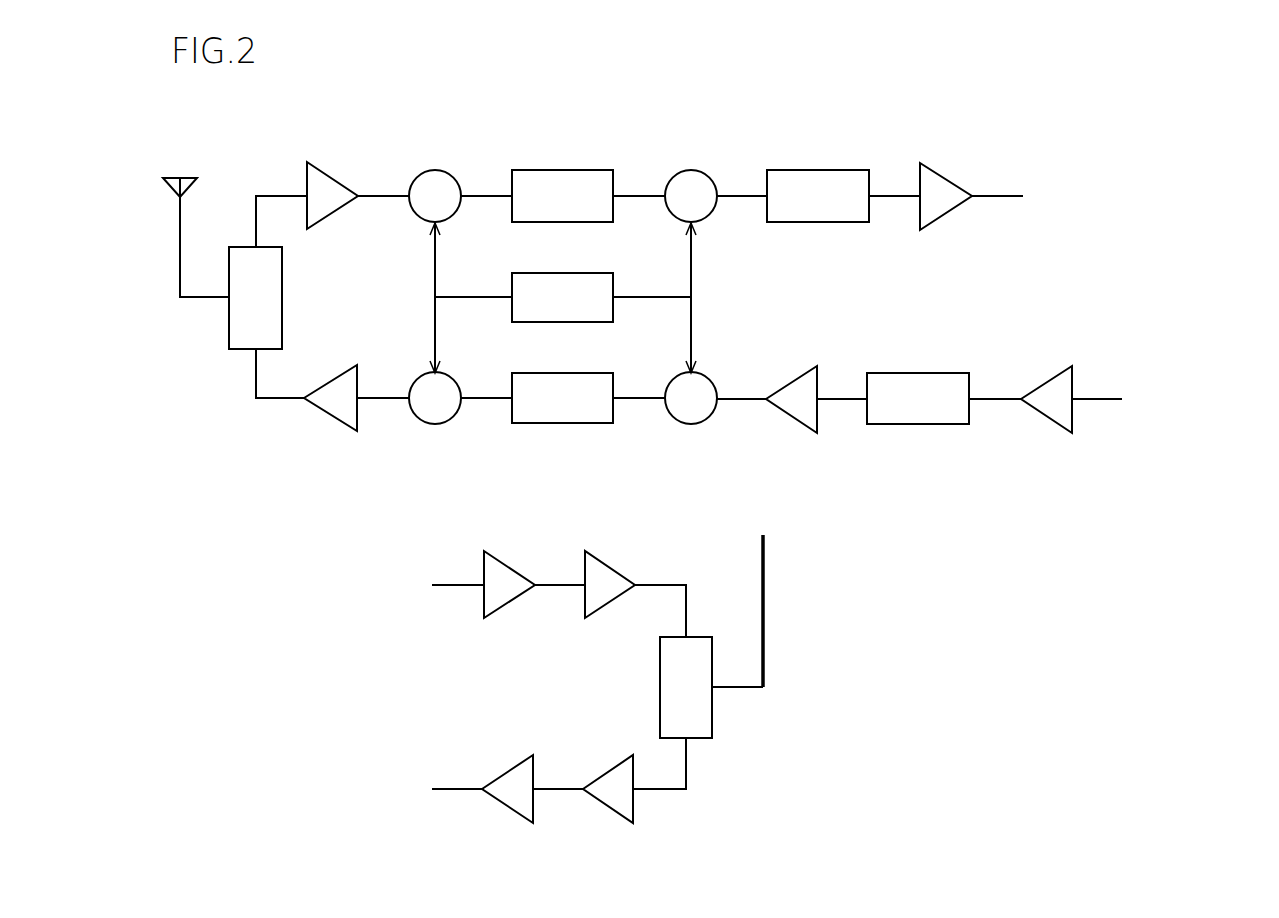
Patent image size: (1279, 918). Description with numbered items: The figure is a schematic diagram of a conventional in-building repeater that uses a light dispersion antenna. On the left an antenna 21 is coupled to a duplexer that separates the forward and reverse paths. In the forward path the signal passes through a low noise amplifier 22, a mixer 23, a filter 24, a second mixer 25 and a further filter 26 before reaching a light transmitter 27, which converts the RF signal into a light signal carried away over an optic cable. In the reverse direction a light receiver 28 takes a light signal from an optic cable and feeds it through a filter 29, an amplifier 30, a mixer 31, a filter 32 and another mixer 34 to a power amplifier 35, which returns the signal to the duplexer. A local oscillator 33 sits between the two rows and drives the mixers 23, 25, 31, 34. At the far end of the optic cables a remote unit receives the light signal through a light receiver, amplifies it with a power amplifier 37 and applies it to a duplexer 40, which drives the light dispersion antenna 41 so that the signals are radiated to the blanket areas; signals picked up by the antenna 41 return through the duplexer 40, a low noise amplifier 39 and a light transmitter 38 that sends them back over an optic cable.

The antenna 21 is at (191, 177).
The low noise amplifier 22 is at (337, 176).
The mixer 23 is at (435, 170).
The filter 24 is at (563, 170).
The mixer 25 is at (691, 170).
The filter 26 is at (818, 170).
The light transmitter 27 is at (949, 176).
The light receiver 28 is at (1049, 421).
The filter 29 is at (921, 424).
The amplifier 30 is at (794, 421).
The mixer 31 is at (691, 424).
The filter 32 is at (563, 423).
The local oscillator 33 is at (563, 322).
The mixer 34 is at (435, 424).
The power amplifier 35 is at (334, 421).
The power amplifier 37 is at (612, 565).
The light transmitter 38 is at (510, 810).
The low noise amplifier 39 is at (612, 810).
The duplexer 40 is at (660, 704).
The light dispersion antenna 41 is at (765, 568).